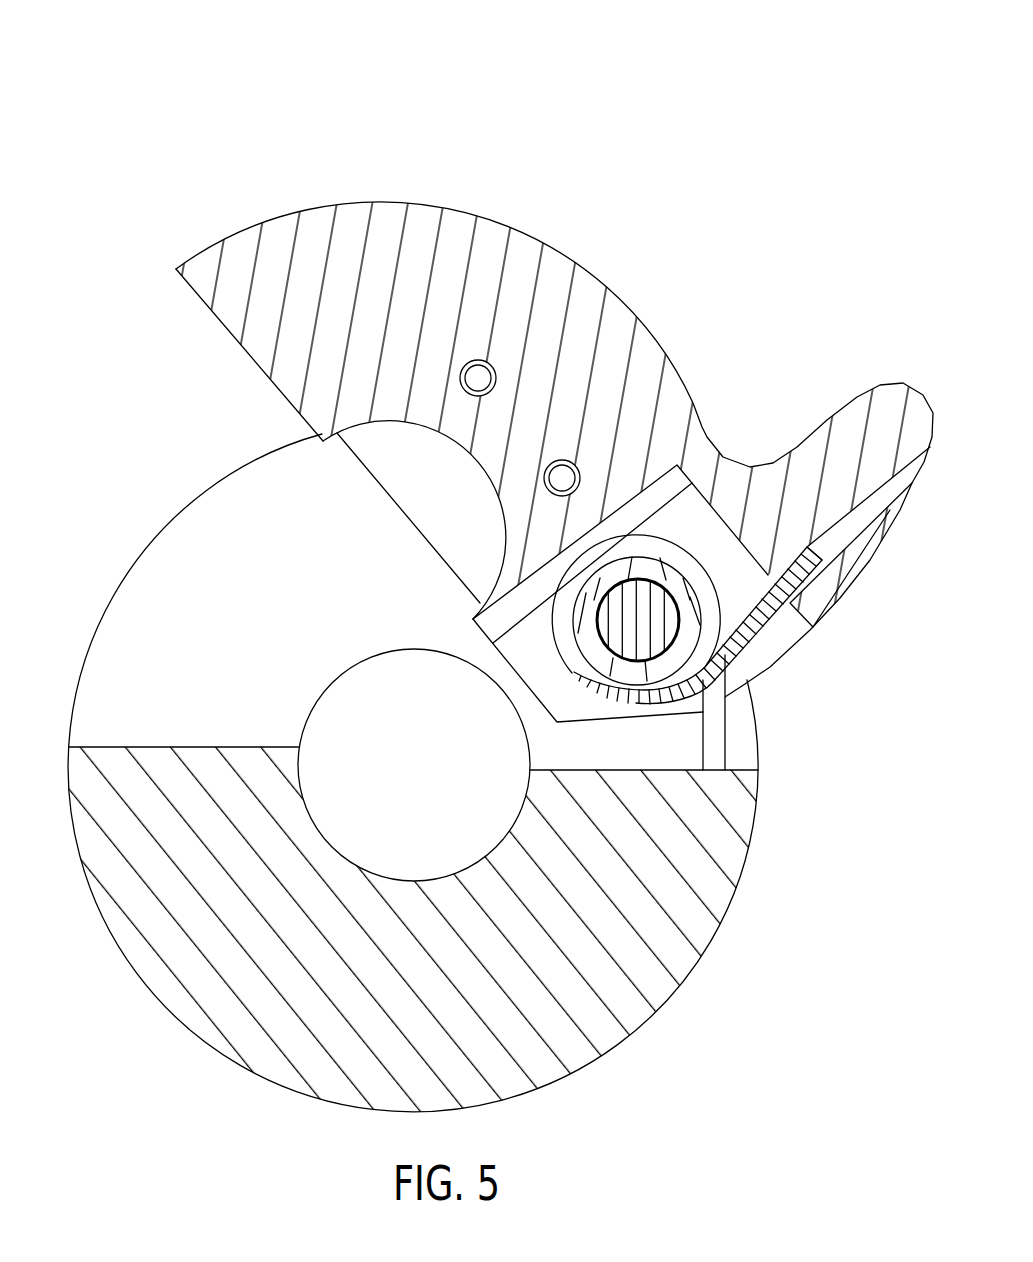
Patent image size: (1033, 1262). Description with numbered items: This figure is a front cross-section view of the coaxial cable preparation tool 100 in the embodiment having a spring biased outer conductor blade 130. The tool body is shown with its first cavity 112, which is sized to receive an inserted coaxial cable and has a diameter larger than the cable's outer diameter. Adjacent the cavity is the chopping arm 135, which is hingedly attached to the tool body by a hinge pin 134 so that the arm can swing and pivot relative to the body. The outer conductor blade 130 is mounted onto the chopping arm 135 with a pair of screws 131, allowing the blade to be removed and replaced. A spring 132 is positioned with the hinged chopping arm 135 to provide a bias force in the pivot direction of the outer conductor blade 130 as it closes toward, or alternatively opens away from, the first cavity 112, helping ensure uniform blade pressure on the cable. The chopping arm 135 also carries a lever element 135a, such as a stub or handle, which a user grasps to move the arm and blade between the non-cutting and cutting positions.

The coaxial cable preparation tool 100 is at (172, 136).
The first cavity 112 is at (421, 792).
The outer conductor blade 130 is at (410, 512).
The screws 131 is at (479, 377).
The spring 132 is at (733, 637).
The hinge pin 134 is at (647, 603).
The chopping arm 135 is at (342, 245).
The lever element 135a is at (887, 400).